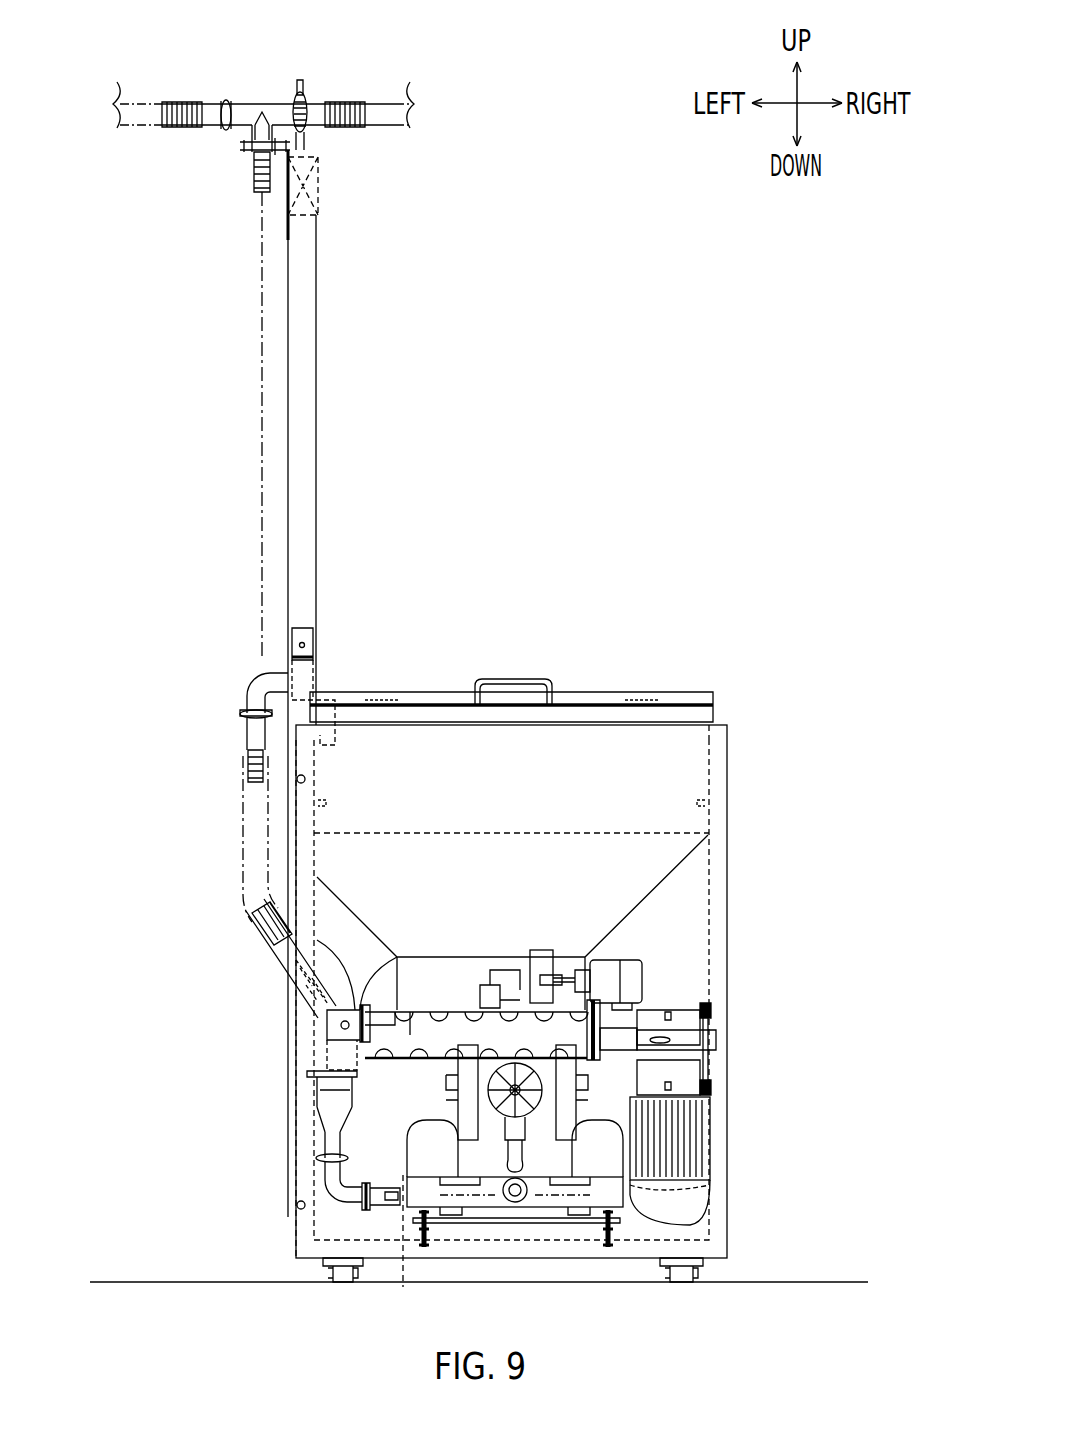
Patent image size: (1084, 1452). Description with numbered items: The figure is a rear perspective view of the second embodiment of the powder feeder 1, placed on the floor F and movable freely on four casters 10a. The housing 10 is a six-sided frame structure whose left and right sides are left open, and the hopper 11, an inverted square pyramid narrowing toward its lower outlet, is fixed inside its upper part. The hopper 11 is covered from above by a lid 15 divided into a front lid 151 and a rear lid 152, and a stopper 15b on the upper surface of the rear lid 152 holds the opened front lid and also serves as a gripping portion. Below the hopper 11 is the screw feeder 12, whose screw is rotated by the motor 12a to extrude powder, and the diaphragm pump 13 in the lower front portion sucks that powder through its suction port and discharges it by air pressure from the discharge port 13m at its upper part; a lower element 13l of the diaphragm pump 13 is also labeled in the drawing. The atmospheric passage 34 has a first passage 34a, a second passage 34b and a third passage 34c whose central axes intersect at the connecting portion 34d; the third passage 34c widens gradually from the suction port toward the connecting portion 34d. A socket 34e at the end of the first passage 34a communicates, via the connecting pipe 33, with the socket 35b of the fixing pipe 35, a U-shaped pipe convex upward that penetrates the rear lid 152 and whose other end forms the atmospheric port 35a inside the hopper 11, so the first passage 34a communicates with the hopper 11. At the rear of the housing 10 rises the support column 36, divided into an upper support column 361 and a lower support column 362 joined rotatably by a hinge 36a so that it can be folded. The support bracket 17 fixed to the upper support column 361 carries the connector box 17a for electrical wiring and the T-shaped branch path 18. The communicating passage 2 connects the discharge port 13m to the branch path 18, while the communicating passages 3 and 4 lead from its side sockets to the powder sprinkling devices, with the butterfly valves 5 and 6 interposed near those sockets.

The powder feeder 1 is at (722, 572).
The communicating passage 2 is at (262, 378).
The communicating passage 3 is at (146, 104).
The communicating passage 4 is at (385, 128).
The butterfly valve 5 is at (226, 100).
The butterfly valve 6 is at (302, 94).
The housing 10 is at (727, 930).
The caster 10a is at (342, 1275).
The hopper 11 is at (668, 860).
The screw feeder 12 is at (320, 1100).
The screw feeder driving motor 12a is at (675, 1215).
The diaphragm pump 13 is at (322, 1170).
The lower pipe portion 13l is at (402, 1255).
The discharge port 13m is at (330, 1040).
The lid 15 is at (434, 700).
The stopper 15b is at (510, 678).
The front lid 151 is at (568, 700).
The rear lid 152 is at (614, 700).
The support bracket 17 is at (287, 198).
The connector box 17a is at (318, 188).
The branch path 18 is at (258, 103).
The connecting pipe 33 is at (243, 822).
The atmospheric passage 34 is at (290, 972).
The first passage 34a is at (352, 1010).
The second passage 34b is at (362, 1010).
The third passage 34c is at (320, 1152).
The connecting portion 34d is at (327, 1058).
The socket 34e is at (276, 948).
The fixing pipe 35 is at (258, 680).
The atmospheric port 35a is at (335, 745).
The socket 35b is at (247, 735).
The support column 36 is at (316, 470).
The hinge 36a is at (298, 628).
The upper support column 361 is at (287, 492).
The lower support column 362 is at (290, 1016).
The floor F is at (830, 1282).